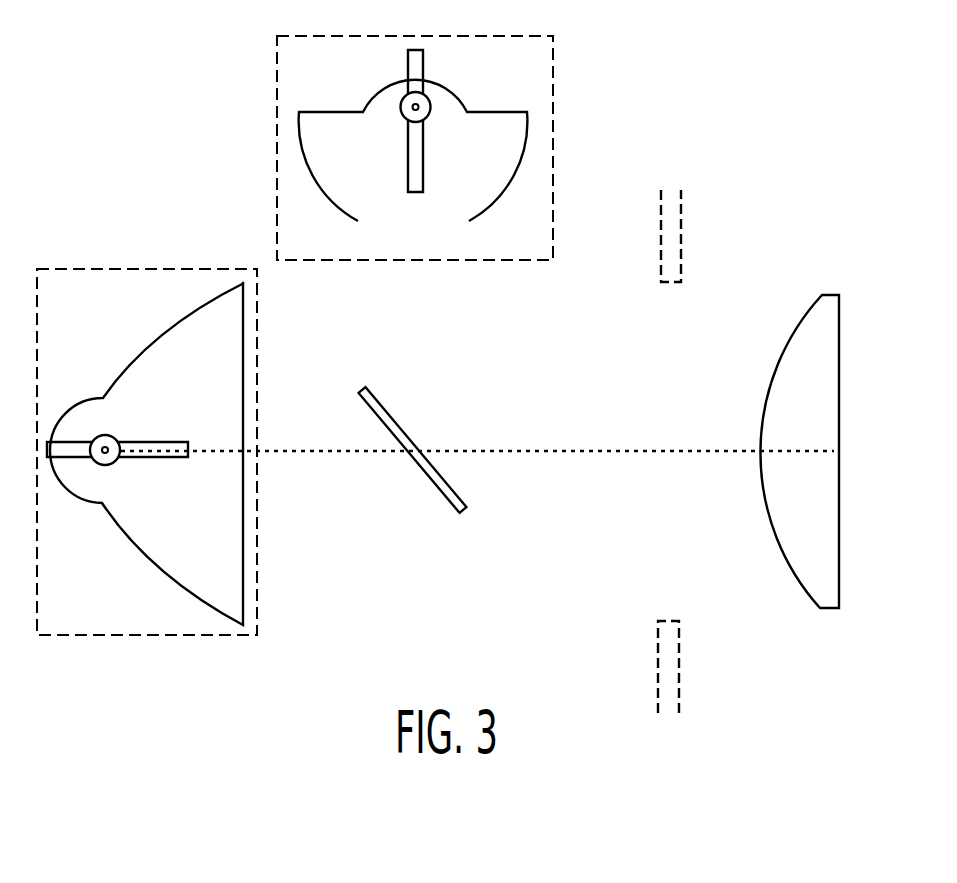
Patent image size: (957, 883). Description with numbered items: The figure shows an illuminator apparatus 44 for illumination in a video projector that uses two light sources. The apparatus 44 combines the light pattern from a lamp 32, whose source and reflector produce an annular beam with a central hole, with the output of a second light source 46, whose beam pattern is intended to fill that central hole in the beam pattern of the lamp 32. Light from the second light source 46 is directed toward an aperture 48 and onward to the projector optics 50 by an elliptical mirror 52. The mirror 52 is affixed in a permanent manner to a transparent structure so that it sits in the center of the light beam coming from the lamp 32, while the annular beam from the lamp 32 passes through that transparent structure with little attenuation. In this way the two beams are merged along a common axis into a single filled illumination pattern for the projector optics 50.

The lamp 32 is at (98, 328).
The illuminator apparatus 44 is at (190, 98).
The second light source 46 is at (526, 82).
The aperture 48 is at (690, 281).
The projector optics 50 is at (813, 295).
The elliptical mirror 52 is at (440, 485).